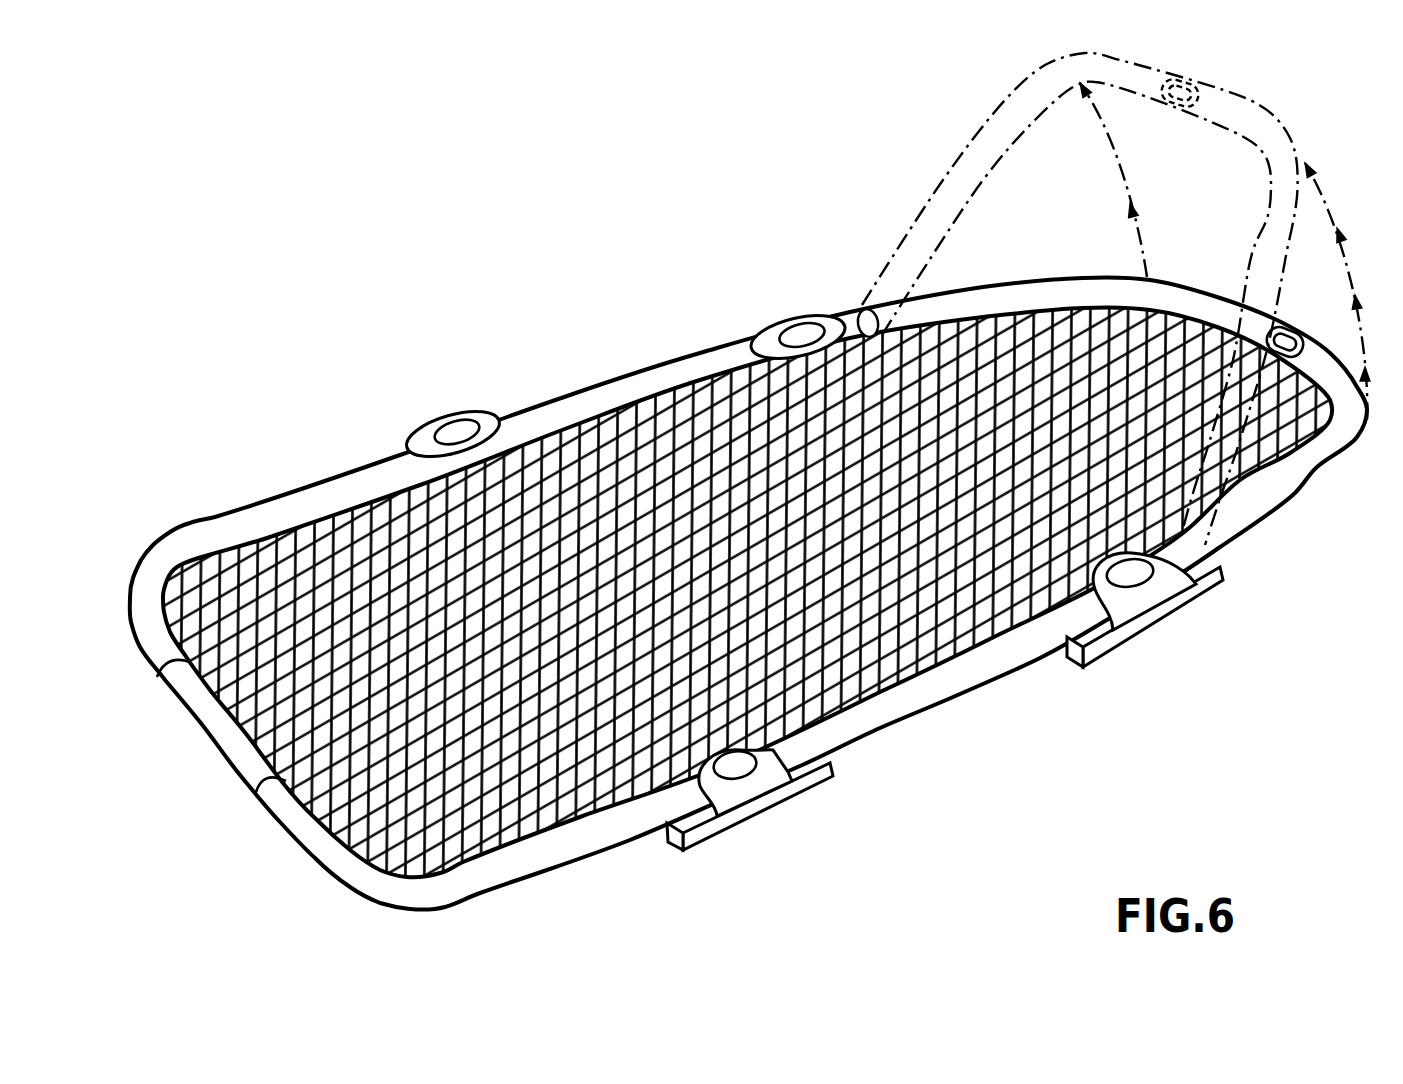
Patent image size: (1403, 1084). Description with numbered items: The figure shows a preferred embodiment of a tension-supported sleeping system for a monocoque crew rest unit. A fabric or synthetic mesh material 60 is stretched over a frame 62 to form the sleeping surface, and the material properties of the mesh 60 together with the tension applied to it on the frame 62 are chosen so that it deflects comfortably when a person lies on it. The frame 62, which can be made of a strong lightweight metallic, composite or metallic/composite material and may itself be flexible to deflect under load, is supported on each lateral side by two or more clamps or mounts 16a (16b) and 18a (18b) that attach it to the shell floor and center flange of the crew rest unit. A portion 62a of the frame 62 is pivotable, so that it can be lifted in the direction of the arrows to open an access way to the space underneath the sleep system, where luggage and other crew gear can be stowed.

The frame 62 is at (330, 450).
The pivotable portion of the frame 62a is at (967, 153).
The fabric or synthetic mesh material 60 is at (626, 472).
The clamp or mount 16a is at (596, 358).
The clamp or mount 16b is at (430, 427).
The clamp or mount 18a is at (1002, 720).
The clamp or mount 18b is at (777, 802).